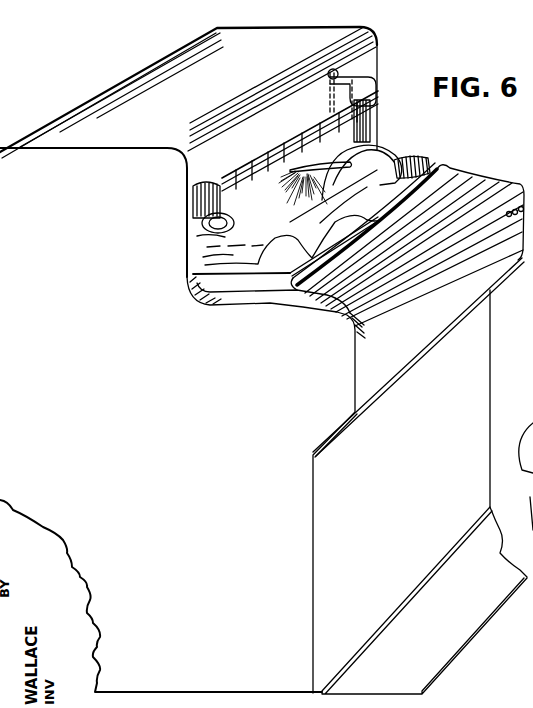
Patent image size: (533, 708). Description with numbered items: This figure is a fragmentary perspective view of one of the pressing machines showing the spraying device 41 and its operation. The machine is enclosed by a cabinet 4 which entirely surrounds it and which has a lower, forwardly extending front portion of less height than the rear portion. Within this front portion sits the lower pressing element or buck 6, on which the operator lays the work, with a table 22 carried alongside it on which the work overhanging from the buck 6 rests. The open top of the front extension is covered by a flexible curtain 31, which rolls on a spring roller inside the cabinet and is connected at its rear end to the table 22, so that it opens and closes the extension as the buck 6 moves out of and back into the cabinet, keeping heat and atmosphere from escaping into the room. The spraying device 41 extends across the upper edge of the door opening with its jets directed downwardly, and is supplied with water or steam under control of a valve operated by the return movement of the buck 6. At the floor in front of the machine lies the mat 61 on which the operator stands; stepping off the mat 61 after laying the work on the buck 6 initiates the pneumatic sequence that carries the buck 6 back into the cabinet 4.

The cabinet 4 is at (133, 92).
The spraying device 41 is at (377, 94).
The lower pressing element or buck 6 is at (383, 154).
The table 22 is at (427, 167).
The flexible curtain 31 is at (480, 183).
The mat 61 is at (457, 643).